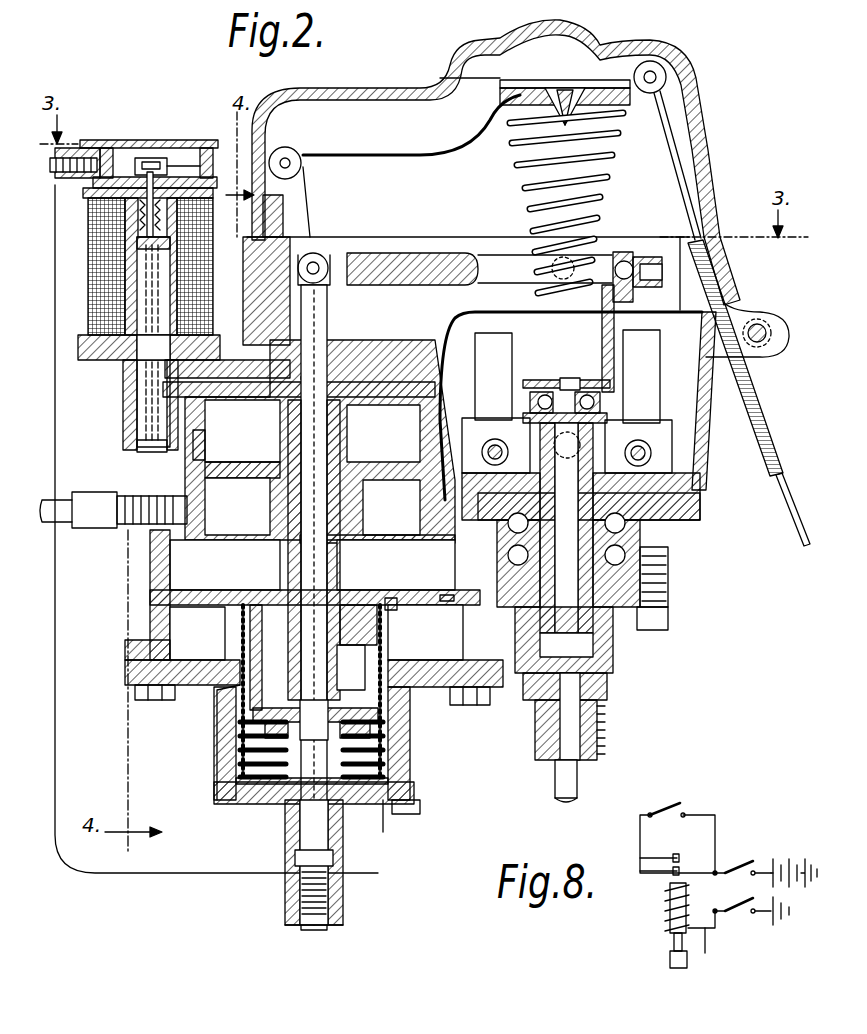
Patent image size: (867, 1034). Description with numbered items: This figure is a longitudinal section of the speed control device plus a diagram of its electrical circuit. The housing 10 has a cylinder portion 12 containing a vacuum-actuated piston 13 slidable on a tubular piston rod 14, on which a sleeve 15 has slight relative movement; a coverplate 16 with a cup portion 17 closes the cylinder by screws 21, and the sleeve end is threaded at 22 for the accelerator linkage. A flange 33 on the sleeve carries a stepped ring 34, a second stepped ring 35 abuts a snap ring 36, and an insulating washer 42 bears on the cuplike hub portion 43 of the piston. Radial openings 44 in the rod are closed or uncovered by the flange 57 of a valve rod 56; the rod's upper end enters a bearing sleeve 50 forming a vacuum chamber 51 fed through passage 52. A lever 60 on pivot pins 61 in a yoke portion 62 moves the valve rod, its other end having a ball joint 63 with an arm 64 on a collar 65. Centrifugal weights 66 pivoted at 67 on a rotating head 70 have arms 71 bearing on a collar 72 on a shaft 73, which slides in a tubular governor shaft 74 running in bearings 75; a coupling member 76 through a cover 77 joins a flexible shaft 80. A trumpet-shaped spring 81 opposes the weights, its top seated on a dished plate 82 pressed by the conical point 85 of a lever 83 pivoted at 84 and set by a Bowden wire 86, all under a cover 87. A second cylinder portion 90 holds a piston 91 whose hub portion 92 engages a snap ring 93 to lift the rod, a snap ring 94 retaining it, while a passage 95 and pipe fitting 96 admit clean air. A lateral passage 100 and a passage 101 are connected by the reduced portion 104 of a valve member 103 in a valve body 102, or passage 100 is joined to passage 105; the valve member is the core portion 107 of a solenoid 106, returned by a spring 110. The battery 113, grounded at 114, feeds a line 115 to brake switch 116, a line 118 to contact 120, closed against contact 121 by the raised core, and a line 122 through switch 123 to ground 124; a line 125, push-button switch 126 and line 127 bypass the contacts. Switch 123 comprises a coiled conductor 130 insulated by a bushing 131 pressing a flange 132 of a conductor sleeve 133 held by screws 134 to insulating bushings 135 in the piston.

In FIG. 2, the housing 10 is at (697, 502).
In FIG. 2, the cylinder portion 12 is at (150, 622).
In FIG. 2, the piston 13 is at (205, 607).
In FIG. 2, the piston rod 14 is at (355, 817).
In FIG. 2, the sleeve 15 is at (343, 827).
In FIG. 2, the coverplate 16 is at (435, 682).
In FIG. 2, the cup portion 17 is at (405, 762).
In FIG. 2, the screws 21 is at (157, 700).
In FIG. 2, the threaded portion 22 is at (315, 915).
In FIG. 2, the flange 33 is at (385, 772).
In FIG. 2, the stepped ring 34 is at (385, 730).
In FIG. 2, the second stepped ring 35 is at (315, 721).
In FIG. 2, the snap ring 36 is at (311, 751).
In FIG. 2, the insulating washer 42 is at (222, 720).
In FIG. 2, the cuplike hub portion 43 is at (240, 642).
In FIG. 2, the radial openings 44 is at (270, 700).
In FIG. 2, the bearing sleeve 50 is at (340, 439).
In FIG. 2, the vacuum chamber 51 is at (347, 415).
In FIG. 2, the passage 52 is at (330, 337).
In FIG. 2, the valve rod 56 is at (300, 602).
In FIG. 2, the flange 57 is at (356, 647).
In FIG. 2, the lever 60 is at (377, 253).
In FIG. 2, the pivot pins 61 is at (540, 283).
In FIG. 2, the yoke portion 62 is at (505, 262).
In FIG. 2, the ball joint 63 is at (637, 282).
In FIG. 2, the arm 64 is at (612, 350).
In FIG. 2, the collar 65 is at (620, 362).
In FIG. 2, the centrifugal weights 66 is at (475, 359).
In FIG. 2, the pivot 67 is at (482, 442).
In FIG. 2, the rotating head 70 is at (690, 478).
In FIG. 2, the arms 71 is at (505, 440).
In FIG. 2, the collar 72 is at (612, 422).
In FIG. 2, the shaft 73 is at (682, 516).
In FIG. 2, the tubular governor shaft 74 is at (620, 620).
In FIG. 2, the bearings 75 is at (660, 548).
In FIG. 2, the coupling member 76 is at (613, 652).
In FIG. 2, the cover 77 is at (600, 692).
In FIG. 2, the flexible shaft 80 is at (556, 802).
In FIG. 2, the trumpet-shaped spring 81 is at (605, 205).
In FIG. 2, the dished plate 82 is at (615, 108).
In FIG. 2, the lever 83 is at (427, 140).
In FIG. 2, the pivot 84 is at (303, 172).
In FIG. 2, the conical point 85 is at (562, 95).
In FIG. 2, the Bowden wire 86 is at (760, 390).
In FIG. 2, the cover 87 is at (392, 88).
In FIG. 2, the second cylinder portion 90 is at (200, 442).
In FIG. 2, the piston 91 is at (256, 460).
In FIG. 2, the cup-like hub portion 92 is at (268, 520).
In FIG. 2, the snap ring 93 is at (363, 522).
In FIG. 2, the snap ring 94 is at (410, 545).
In FIG. 2, the passage 95 is at (190, 540).
In FIG. 2, the pipe fitting 96 is at (100, 530).
In FIG. 2, the lateral passage 100 is at (200, 410).
In FIG. 2, the passage 101 is at (250, 382).
In FIG. 2, the valve body 102 is at (126, 397).
In FIG. 2, the valve member 103 is at (130, 370).
In FIG. 8, the valve member 103 is at (665, 962).
In FIG. 2, the reduced portion 104 is at (128, 417).
In FIG. 2, the passage 105 is at (146, 452).
In FIG. 2, the solenoid 106 is at (110, 264).
In FIG. 8, the solenoid 106 is at (662, 922).
In FIG. 2, the core portion 107 is at (166, 294).
In FIG. 8, the core portion 107 is at (665, 937).
In FIG. 2, the spring 110 is at (128, 178).
In FIG. 8, the battery 113 is at (775, 854).
In FIG. 8, the ground 114 is at (806, 860).
In FIG. 8, the line 115 is at (730, 872).
In FIG. 8, the switch 116 is at (748, 864).
In FIG. 8, the line 118 is at (695, 862).
In FIG. 2, the contact 120 is at (168, 170).
In FIG. 8, the contact 120 is at (650, 870).
In FIG. 2, the contact 121 is at (150, 158).
In FIG. 8, the contact 121 is at (665, 854).
In FIG. 2, the line 122 is at (190, 873).
In FIG. 8, the line 122 is at (700, 930).
In FIG. 8, the switch 123 is at (730, 912).
In FIG. 8, the ground 124 is at (785, 924).
In FIG. 8, the line 125 is at (716, 812).
In FIG. 8, the push-button switch 126 is at (662, 800).
In FIG. 8, the line 127 is at (635, 822).
In FIG. 2, the coiled conductor 130 is at (385, 747).
In FIG. 2, the insulating bushing 131 is at (405, 812).
In FIG. 2, the flange 132 is at (400, 612).
In FIG. 2, the conductor sleeve 133 is at (388, 650).
In FIG. 2, the screws 134 is at (385, 600).
In FIG. 2, the insulating bushings 135 is at (416, 600).